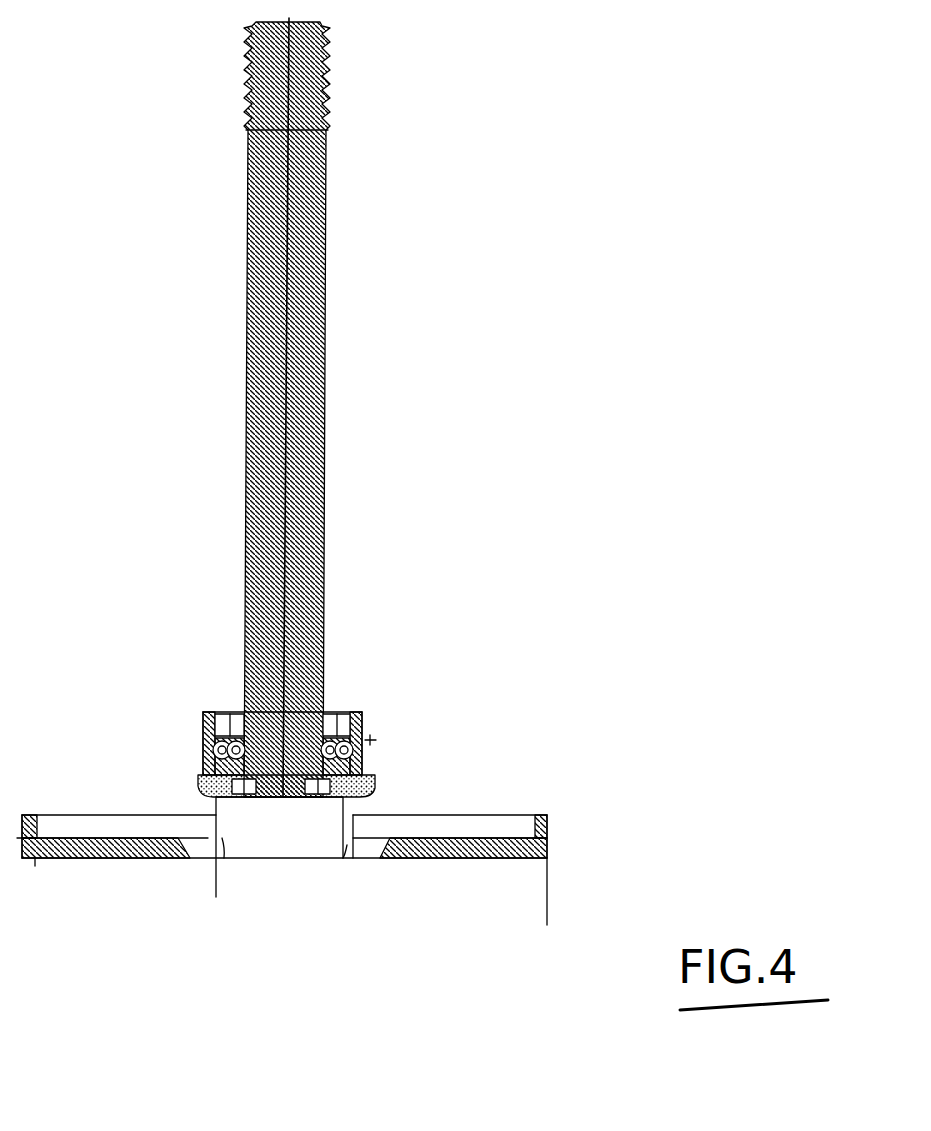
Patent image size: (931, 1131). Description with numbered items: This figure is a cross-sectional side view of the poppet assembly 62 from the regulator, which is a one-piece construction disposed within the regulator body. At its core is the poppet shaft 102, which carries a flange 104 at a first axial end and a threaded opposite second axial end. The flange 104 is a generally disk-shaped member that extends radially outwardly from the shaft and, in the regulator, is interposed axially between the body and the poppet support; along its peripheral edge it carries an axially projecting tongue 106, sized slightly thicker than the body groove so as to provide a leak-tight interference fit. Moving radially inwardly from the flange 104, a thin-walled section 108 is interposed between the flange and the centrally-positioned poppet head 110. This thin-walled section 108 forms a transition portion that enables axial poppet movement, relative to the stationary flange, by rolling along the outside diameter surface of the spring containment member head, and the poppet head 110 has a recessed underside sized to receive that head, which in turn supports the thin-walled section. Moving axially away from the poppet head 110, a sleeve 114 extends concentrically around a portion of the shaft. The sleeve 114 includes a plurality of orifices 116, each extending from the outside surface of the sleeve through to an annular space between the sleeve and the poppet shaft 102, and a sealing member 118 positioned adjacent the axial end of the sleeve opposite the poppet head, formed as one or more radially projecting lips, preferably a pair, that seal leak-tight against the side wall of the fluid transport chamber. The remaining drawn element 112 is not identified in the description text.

The poppet assembly 62 is at (374, 409).
The poppet shaft 102 is at (300, 537).
The flange 104 is at (457, 860).
The tongue 106 is at (547, 822).
The thin-walled section 108 is at (222, 840).
The poppet head 110 is at (364, 710).
The hub sleeve 112 is at (323, 820).
The sleeve 114 is at (360, 777).
The orifices 116 is at (232, 735).
The sealing member 118 is at (367, 715).